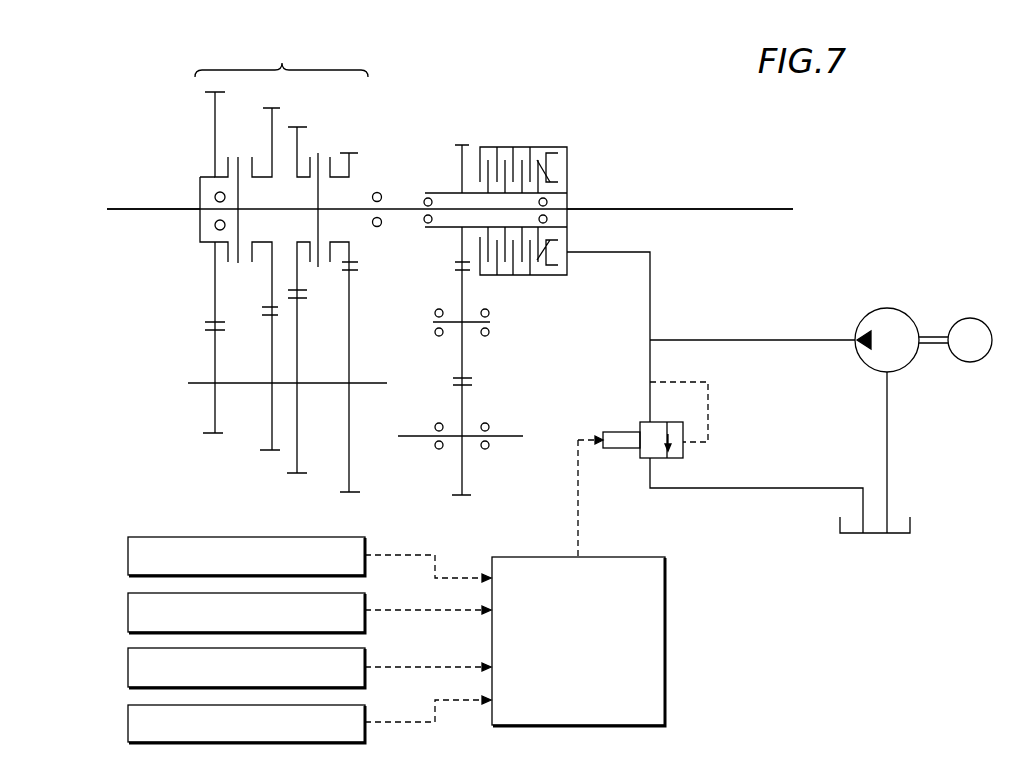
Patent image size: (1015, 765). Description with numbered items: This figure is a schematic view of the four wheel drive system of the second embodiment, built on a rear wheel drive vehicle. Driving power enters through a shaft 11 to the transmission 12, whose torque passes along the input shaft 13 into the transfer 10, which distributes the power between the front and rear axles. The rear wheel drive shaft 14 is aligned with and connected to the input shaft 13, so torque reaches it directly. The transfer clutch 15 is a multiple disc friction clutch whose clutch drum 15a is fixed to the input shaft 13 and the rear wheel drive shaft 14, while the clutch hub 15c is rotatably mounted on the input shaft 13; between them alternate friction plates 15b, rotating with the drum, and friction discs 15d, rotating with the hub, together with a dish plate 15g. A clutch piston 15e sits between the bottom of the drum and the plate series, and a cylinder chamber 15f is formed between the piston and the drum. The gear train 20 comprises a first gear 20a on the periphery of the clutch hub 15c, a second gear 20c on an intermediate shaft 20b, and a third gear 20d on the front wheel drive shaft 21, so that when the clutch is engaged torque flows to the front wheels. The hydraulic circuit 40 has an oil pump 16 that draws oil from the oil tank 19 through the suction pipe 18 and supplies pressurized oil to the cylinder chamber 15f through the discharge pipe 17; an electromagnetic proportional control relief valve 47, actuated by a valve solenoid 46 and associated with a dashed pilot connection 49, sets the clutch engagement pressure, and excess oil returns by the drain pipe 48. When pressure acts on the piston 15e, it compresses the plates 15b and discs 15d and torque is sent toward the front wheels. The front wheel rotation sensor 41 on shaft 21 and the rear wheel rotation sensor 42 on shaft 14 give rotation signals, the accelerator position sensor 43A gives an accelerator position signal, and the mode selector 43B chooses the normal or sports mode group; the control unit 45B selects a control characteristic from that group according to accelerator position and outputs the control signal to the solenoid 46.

The transfer 10 is at (673, 89).
The input shaft 11 is at (141, 208).
The transmission 12 is at (287, 264).
The input shaft 13 is at (403, 207).
The rear wheel drive shaft 14 is at (704, 208).
The transfer clutch 15 is at (517, 172).
The clutch drum 15a is at (560, 147).
The friction plates 15b is at (495, 162).
The clutch hub 15c is at (443, 190).
The friction discs 15d is at (523, 162).
The clutch piston 15e is at (547, 170).
The cylinder chamber 15f is at (557, 247).
The dish plate 15g is at (547, 162).
The oil pump 16 is at (905, 315).
The discharge pipe 17 is at (749, 340).
The suction pipe 18 is at (888, 464).
The oil tank 19 is at (913, 525).
The gear train 20 is at (474, 361).
The first gear 20a is at (460, 245).
The intermediate shaft 20b is at (490, 313).
The second gear 20c is at (463, 365).
The third gear 20d is at (494, 404).
The front wheel drive shaft 21 is at (406, 440).
The hydraulic circuit 40 is at (736, 550).
The front wheel rotation sensor 41 is at (128, 562).
The rear wheel rotation sensor 42 is at (128, 618).
The accelerator position sensor 43A is at (128, 672).
The mode selector 43B is at (128, 729).
The control unit 45B is at (667, 648).
The valve solenoid 46 is at (615, 448).
The electromagnetic proportional control relief valve 47 is at (677, 458).
The drain pipe 48 is at (798, 488).
The pilot line 49 is at (708, 413).